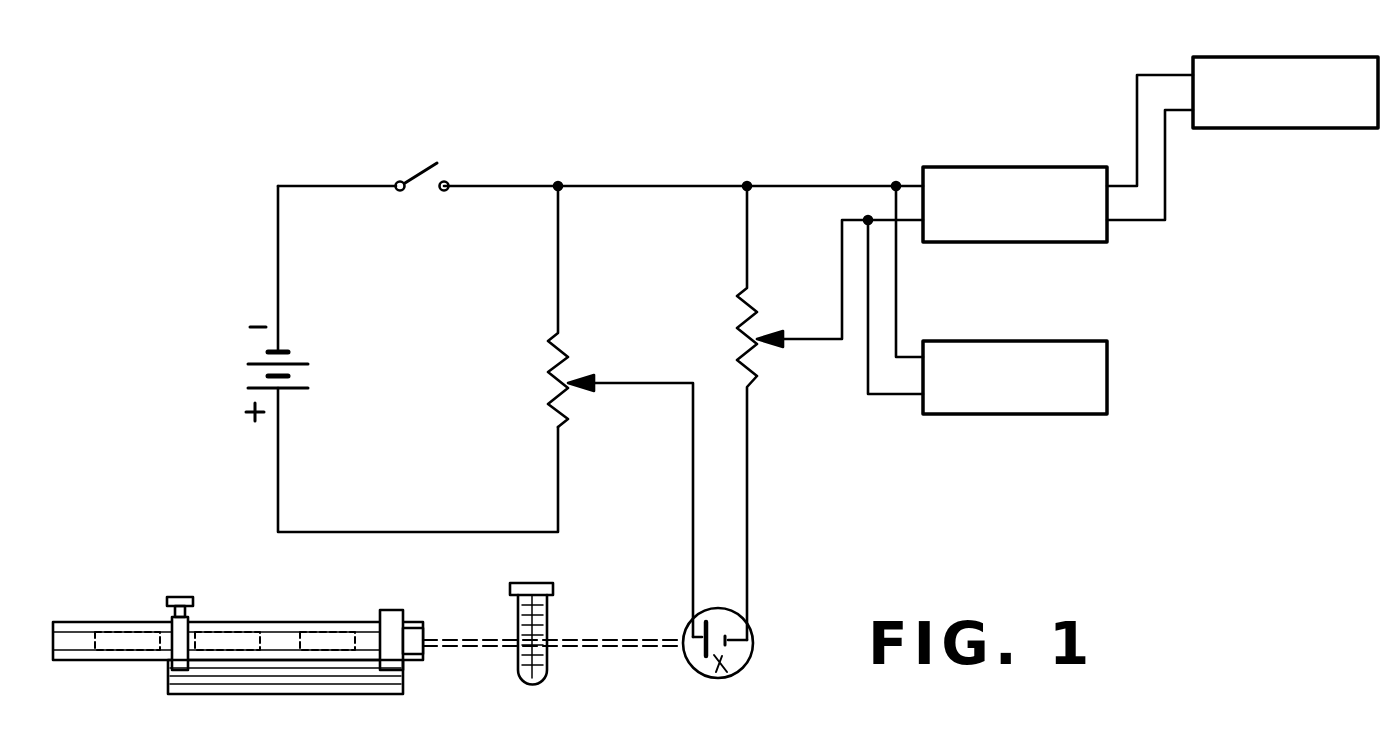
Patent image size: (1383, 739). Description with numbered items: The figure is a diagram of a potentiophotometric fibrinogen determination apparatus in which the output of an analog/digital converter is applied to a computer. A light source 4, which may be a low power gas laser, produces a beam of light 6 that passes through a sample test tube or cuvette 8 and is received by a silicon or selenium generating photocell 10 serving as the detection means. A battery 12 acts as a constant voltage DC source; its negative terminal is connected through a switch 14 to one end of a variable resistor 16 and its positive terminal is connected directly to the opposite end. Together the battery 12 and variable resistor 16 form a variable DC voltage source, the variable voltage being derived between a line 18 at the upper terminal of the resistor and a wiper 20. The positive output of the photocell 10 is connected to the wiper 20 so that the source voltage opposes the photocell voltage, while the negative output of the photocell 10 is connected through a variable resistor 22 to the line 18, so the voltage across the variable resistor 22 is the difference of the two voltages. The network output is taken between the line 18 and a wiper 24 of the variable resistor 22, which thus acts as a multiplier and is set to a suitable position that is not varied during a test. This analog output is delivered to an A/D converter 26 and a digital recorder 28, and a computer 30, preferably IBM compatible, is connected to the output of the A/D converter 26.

The light source 4 is at (303, 622).
The beam of light 6 is at (446, 650).
The sample test tube or cuvette 8 is at (545, 666).
The photocell 10 is at (752, 662).
The battery 12 is at (300, 362).
The switch 14 is at (414, 170).
The variable resistor 16 is at (550, 389).
The line 18 is at (672, 186).
The wiper 20 is at (667, 382).
The variable resistor 22 is at (740, 336).
The wiper 24 is at (807, 338).
The A/D converter 26 is at (997, 172).
The digital recorder 28 is at (997, 344).
The computer 30 is at (1273, 60).